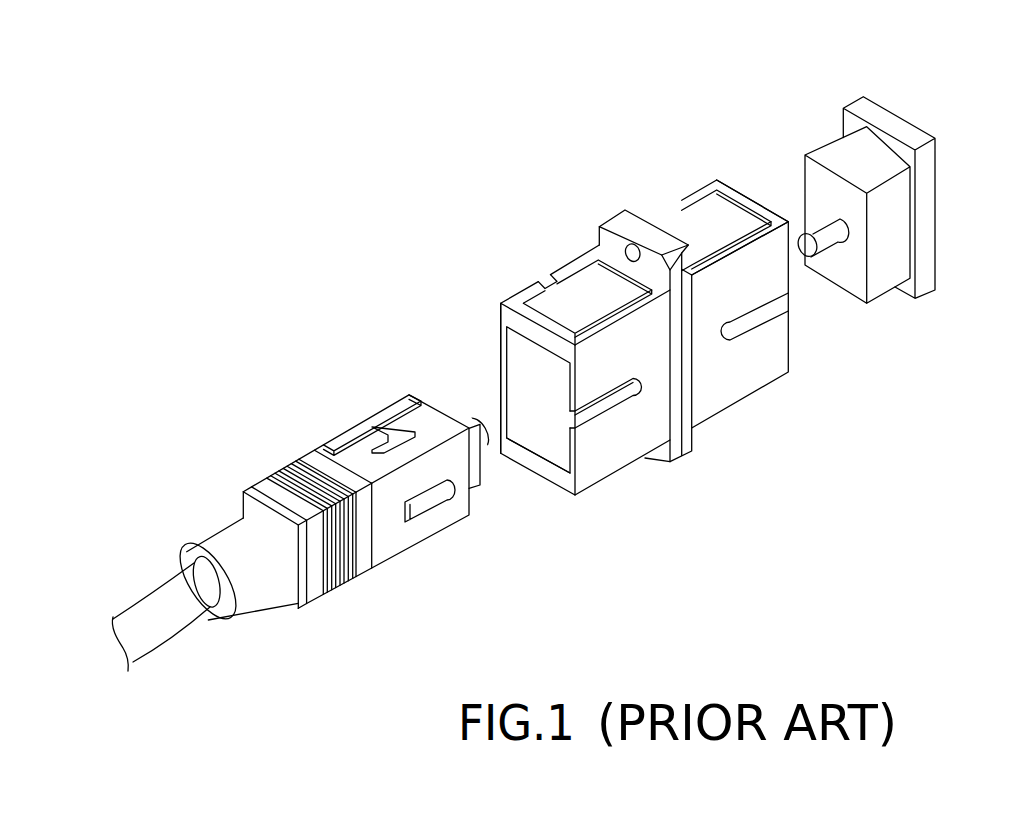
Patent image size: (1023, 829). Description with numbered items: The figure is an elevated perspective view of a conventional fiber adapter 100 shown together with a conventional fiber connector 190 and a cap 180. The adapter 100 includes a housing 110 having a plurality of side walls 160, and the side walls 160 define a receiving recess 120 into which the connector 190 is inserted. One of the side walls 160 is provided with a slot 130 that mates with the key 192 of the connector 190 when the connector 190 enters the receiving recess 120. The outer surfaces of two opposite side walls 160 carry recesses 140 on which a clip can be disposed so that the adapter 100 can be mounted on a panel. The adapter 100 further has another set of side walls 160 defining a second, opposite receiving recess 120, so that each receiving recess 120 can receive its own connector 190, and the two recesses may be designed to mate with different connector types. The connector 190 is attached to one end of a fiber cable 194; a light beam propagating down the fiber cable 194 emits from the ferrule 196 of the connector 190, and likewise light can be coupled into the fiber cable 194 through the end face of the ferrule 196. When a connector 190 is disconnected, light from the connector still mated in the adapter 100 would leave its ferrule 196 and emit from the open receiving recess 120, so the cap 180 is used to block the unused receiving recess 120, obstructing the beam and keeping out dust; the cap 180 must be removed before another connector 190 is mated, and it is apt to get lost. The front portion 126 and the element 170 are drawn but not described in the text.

The fiber adapter 100 is at (560, 136).
The housing 110 is at (498, 281).
The receiving recess 120 is at (552, 423).
The front portion 126 is at (501, 318).
The slot 130 is at (618, 396).
The recess 140 is at (593, 280).
The side wall 160 is at (501, 387).
The mounting flange 170 is at (553, 266).
The cap 180 is at (918, 117).
The connector 190 is at (276, 430).
The key 192 is at (428, 506).
The fiber cable 194 is at (170, 607).
The ferrule 196 is at (480, 423).